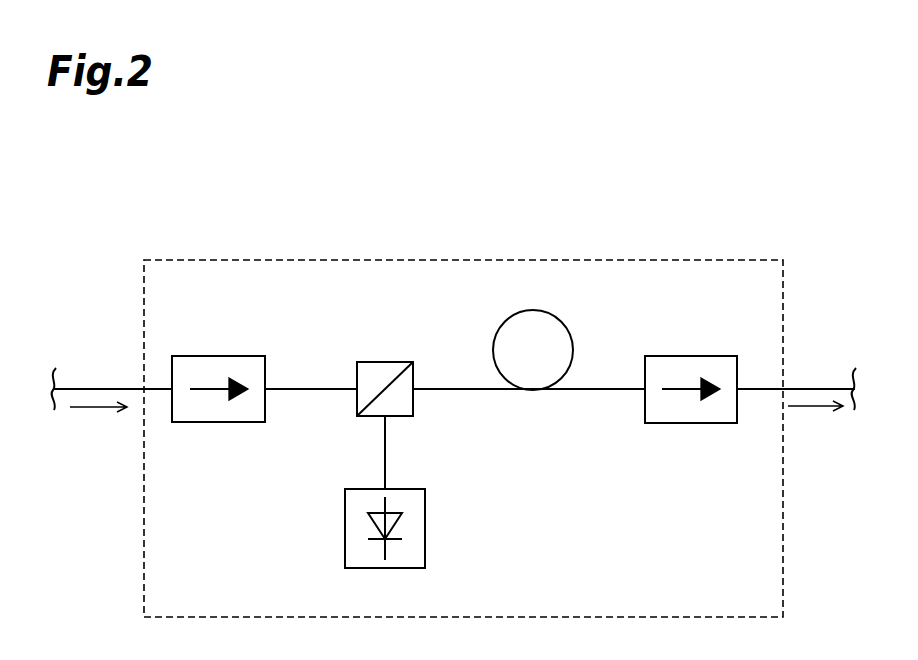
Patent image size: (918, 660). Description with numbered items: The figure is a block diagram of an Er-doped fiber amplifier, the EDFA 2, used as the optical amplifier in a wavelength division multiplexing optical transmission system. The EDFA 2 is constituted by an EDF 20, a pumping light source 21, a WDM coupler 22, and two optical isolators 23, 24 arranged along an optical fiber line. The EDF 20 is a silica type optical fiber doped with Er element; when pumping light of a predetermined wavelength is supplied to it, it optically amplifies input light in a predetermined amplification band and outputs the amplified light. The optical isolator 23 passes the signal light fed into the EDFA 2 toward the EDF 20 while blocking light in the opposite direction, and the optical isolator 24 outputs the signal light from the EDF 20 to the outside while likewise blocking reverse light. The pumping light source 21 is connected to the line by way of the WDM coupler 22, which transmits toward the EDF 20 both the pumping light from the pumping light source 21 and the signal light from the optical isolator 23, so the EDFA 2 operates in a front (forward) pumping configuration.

The EDFA 2 is at (386, 260).
The EDF 20 is at (562, 316).
The pumping light source 21 is at (425, 527).
The WDM coupler 22 is at (385, 362).
The optical isolator 23 is at (220, 356).
The optical isolator 24 is at (700, 356).